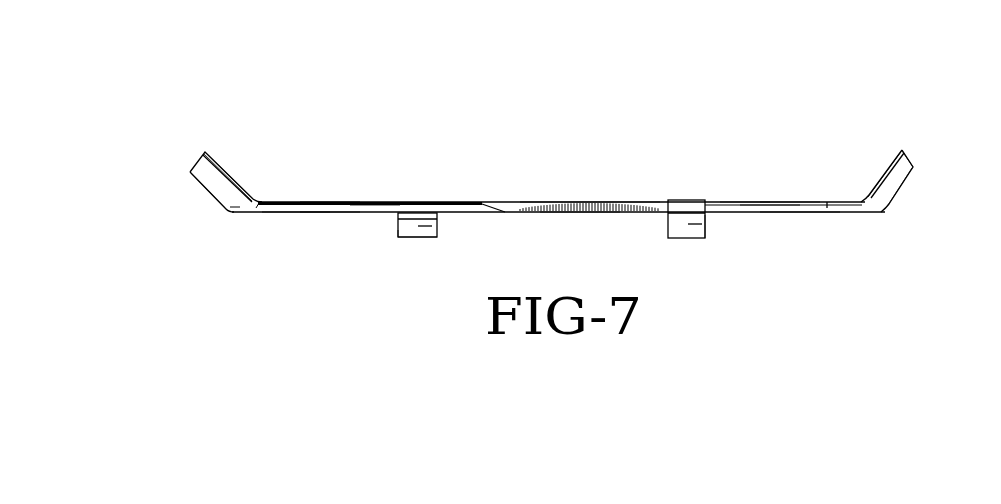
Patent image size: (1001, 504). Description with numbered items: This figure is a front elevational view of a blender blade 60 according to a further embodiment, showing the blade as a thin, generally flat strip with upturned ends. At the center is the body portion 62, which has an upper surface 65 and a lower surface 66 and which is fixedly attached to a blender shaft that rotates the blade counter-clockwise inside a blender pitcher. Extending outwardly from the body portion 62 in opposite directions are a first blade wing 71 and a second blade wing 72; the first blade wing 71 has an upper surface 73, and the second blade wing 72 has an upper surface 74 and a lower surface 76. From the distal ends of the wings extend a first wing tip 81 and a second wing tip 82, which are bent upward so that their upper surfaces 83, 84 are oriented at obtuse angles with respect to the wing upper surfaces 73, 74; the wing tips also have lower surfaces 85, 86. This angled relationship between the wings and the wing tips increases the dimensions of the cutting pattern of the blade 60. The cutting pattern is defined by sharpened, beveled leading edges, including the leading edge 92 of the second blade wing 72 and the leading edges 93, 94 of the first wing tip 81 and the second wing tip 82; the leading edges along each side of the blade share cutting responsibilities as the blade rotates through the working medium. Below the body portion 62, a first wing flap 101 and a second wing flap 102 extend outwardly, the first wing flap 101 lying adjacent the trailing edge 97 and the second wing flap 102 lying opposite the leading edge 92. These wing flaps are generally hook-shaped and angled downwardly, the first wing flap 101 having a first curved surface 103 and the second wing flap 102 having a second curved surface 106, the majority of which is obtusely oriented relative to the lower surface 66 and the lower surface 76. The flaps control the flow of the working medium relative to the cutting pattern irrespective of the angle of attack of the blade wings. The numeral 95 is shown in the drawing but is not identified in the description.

The blender blade 60 is at (466, 152).
The body portion 62 is at (555, 196).
The upper surface 65 is at (606, 200).
The lower surface 66 is at (578, 213).
The first blade wing 71 is at (789, 196).
The second blade wing 72 is at (325, 195).
The upper surface 73 is at (745, 200).
The upper surface 74 is at (368, 200).
The lower surface 76 is at (321, 214).
The first wing tip 81 is at (920, 157).
The second wing tip 82 is at (194, 150).
The upper surface 83 is at (892, 156).
The upper surface 84 is at (233, 178).
The lower surface 85 is at (890, 201).
The lower surface 86 is at (211, 197).
The leading edge 92 is at (293, 213).
The leading edge 93 is at (863, 182).
The leading edge 94 is at (223, 160).
The right arm lower surface 95 is at (805, 214).
The trailing edge 97 is at (767, 207).
The first wing flap 101 is at (687, 248).
The second wing flap 102 is at (405, 248).
The first curved surface 103 is at (703, 228).
The second curved surface 106 is at (437, 235).